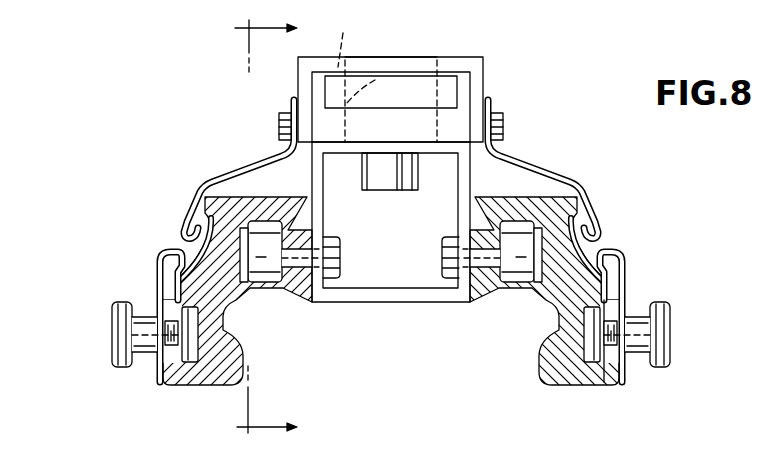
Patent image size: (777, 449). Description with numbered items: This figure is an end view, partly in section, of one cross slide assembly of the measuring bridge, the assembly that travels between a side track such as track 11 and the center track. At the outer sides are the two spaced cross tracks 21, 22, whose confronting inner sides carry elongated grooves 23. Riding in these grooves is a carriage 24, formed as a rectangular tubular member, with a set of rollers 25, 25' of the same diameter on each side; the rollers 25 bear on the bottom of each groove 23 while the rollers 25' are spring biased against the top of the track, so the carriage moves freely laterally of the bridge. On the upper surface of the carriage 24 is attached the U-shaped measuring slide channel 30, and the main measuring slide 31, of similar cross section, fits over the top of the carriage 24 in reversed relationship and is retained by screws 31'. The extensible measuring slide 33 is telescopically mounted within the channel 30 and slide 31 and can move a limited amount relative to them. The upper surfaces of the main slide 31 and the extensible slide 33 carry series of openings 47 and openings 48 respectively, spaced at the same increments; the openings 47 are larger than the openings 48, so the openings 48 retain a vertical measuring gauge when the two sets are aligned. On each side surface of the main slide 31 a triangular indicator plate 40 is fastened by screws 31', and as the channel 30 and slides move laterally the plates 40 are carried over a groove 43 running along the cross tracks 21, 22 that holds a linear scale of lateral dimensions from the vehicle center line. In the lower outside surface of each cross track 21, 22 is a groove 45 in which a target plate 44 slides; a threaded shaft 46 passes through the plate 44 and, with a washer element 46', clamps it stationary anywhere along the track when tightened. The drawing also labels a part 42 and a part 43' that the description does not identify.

The track 11 is at (254, 227).
The cross track 21 is at (215, 367).
The cross track 22 is at (625, 292).
The elongated groove 23 is at (268, 283).
The carriage 24 is at (478, 172).
The roller 25 is at (398, 219).
The roller 25' is at (391, 226).
The measuring slide channel 30 is at (380, 136).
The main measuring slide 31 is at (390, 79).
The screw 31' is at (376, 104).
The extensible measuring slide 33 is at (378, 100).
The indicator plate 40 is at (243, 168).
The screw shaft 42 is at (660, 318).
The groove 43 is at (157, 240).
The curved clip strip 43' is at (629, 241).
The target plate 44 is at (160, 253).
The groove 45 is at (177, 382).
The threaded shaft 46 is at (389, 334).
The washer element 46' is at (391, 337).
The opening 47 is at (380, 76).
The opening 48 is at (391, 46).